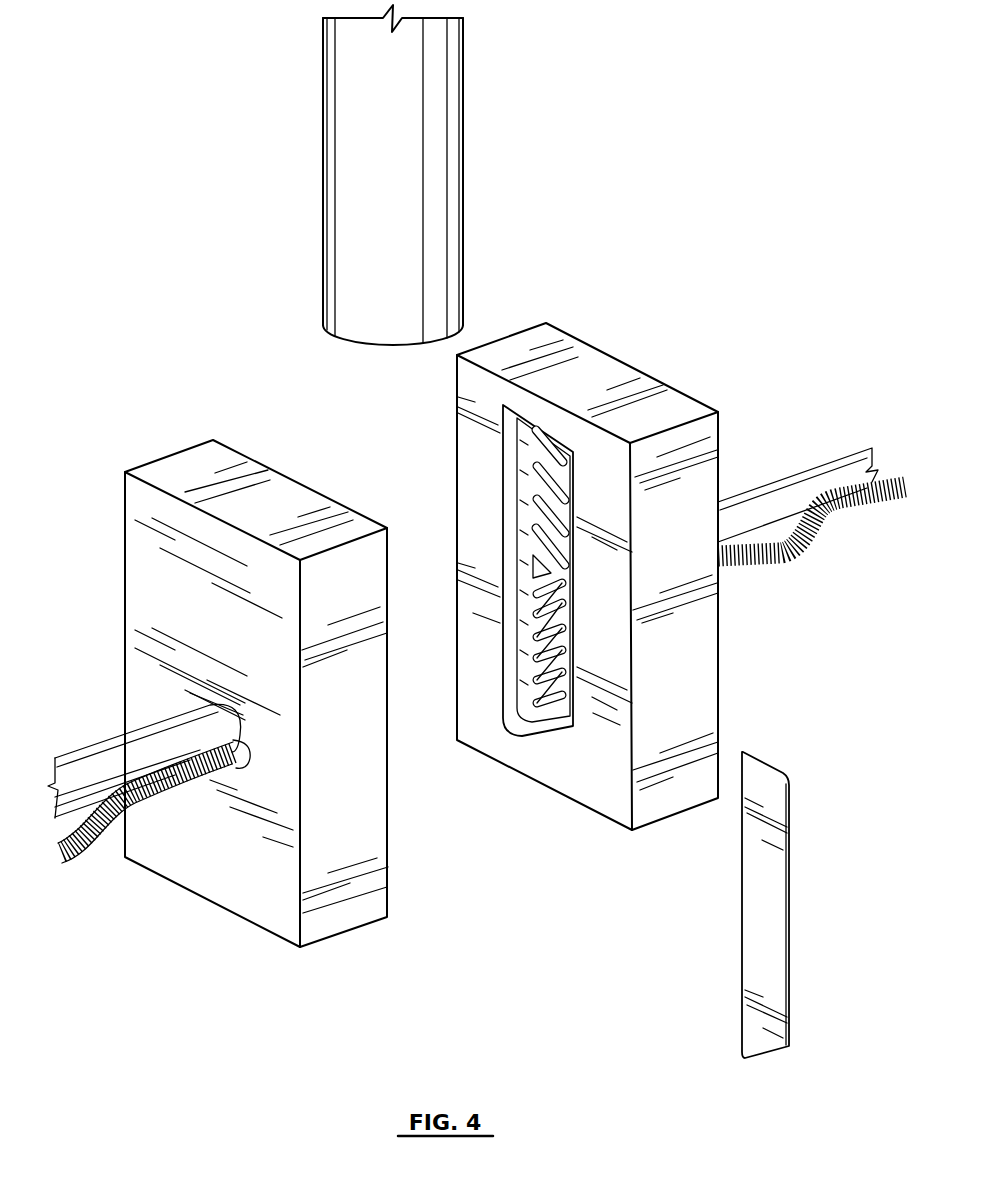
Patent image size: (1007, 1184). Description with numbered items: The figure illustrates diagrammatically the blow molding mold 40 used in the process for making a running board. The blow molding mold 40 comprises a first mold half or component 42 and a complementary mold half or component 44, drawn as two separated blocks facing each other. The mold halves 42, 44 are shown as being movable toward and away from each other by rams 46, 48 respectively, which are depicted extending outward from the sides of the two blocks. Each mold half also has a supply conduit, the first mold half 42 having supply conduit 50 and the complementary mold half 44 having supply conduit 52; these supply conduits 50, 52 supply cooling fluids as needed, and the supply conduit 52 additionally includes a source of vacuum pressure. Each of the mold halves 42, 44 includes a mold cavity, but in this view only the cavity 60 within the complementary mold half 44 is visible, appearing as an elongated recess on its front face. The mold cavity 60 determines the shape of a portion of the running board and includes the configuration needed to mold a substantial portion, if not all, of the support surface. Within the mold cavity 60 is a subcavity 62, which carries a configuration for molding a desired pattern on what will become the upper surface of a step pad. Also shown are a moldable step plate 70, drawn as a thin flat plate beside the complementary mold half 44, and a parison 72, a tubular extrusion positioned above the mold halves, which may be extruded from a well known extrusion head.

The blow molding mold 40 is at (100, 470).
The first mold half 42 is at (225, 462).
The complementary mold half 44 is at (684, 412).
The ram 46 is at (78, 762).
The ram 48 is at (790, 492).
The supply conduit 50 is at (92, 856).
The supply conduit 52 is at (798, 558).
The mold cavity 60 is at (533, 722).
The subcavity 62 is at (562, 450).
The moldable step plate 70 is at (760, 775).
The parison 72 is at (323, 198).